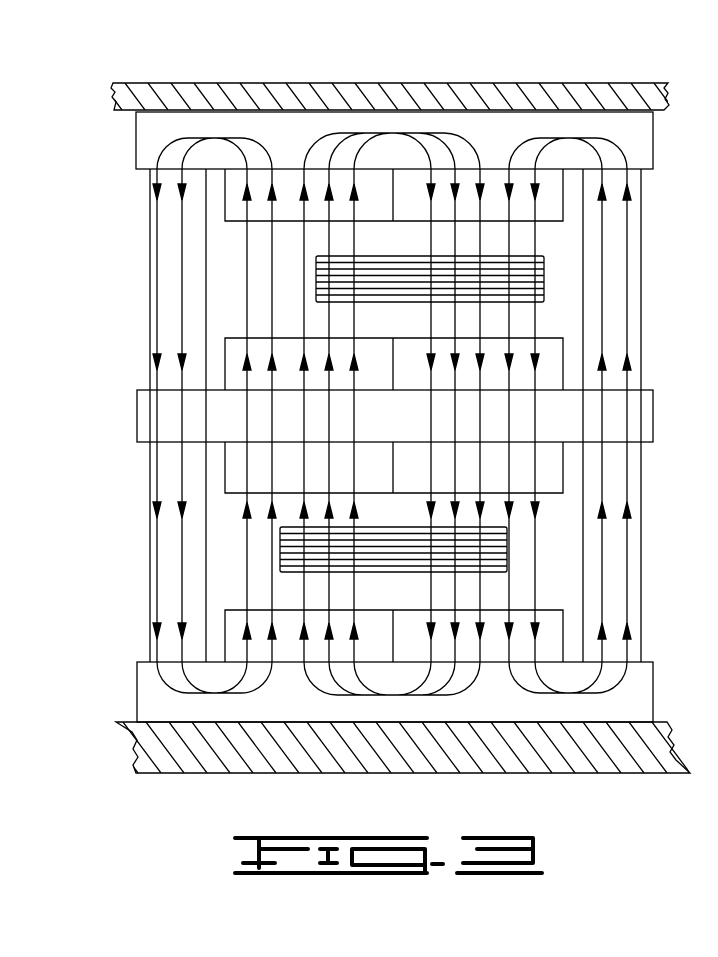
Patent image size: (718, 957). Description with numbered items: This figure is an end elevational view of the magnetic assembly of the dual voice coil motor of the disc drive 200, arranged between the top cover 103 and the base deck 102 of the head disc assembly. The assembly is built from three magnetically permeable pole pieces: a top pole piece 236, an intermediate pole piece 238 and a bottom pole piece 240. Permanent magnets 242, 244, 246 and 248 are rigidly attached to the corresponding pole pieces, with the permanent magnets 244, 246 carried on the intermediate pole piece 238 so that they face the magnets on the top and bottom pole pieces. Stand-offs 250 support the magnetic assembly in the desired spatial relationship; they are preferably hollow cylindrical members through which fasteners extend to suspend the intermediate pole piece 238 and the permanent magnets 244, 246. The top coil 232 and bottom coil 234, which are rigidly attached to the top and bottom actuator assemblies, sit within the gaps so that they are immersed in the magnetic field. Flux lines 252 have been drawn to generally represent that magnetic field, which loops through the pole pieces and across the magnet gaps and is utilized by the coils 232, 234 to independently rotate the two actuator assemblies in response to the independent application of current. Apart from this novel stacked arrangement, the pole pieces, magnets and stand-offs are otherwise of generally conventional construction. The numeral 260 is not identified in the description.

The base deck 102 is at (578, 766).
The top cover 103 is at (235, 96).
The disc drive 200 is at (432, 72).
The top coil 232 is at (340, 283).
The bottom coil 234 is at (320, 553).
The top pole piece 236 is at (212, 152).
The intermediate pole piece 238 is at (162, 411).
The bottom pole piece 240 is at (165, 702).
The permanent magnet 242 is at (237, 208).
The permanent magnet 244 is at (237, 353).
The permanent magnet 246 is at (237, 471).
The permanent magnet 248 is at (237, 640).
The stand-offs 250 is at (170, 300).
The flux lines 252 is at (226, 703).
The air gap 260 is at (434, 415).